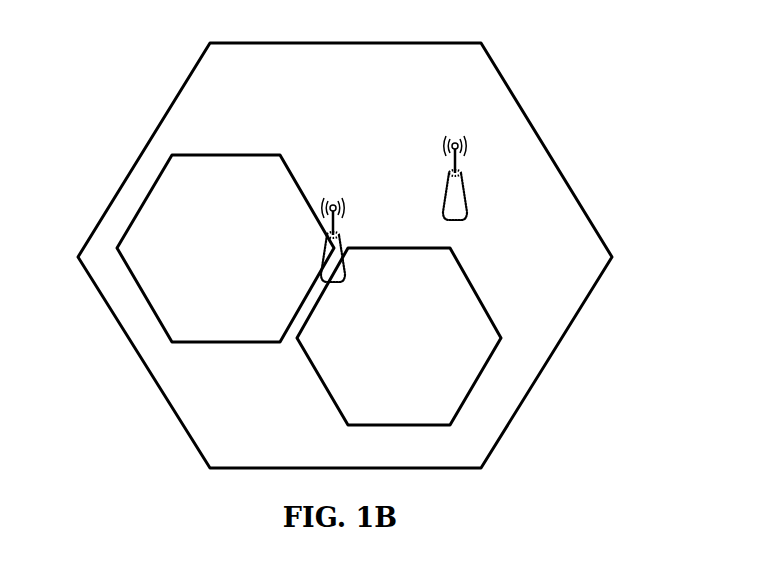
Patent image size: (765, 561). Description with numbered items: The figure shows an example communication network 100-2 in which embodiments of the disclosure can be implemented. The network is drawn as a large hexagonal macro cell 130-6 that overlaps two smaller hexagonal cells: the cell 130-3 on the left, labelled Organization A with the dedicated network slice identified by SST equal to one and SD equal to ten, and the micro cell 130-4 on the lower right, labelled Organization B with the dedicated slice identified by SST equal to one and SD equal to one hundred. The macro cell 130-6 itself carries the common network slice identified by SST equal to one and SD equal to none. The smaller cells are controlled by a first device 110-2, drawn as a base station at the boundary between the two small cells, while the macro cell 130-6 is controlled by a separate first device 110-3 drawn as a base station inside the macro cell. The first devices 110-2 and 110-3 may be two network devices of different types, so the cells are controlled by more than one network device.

The communication network 100-2 is at (177, 60).
The macro cell 130-6 is at (531, 122).
The cell 130-3 is at (225, 157).
The micro cell 130-4 is at (478, 296).
The first device 110-2 is at (336, 231).
The first device 110-3 is at (460, 180).